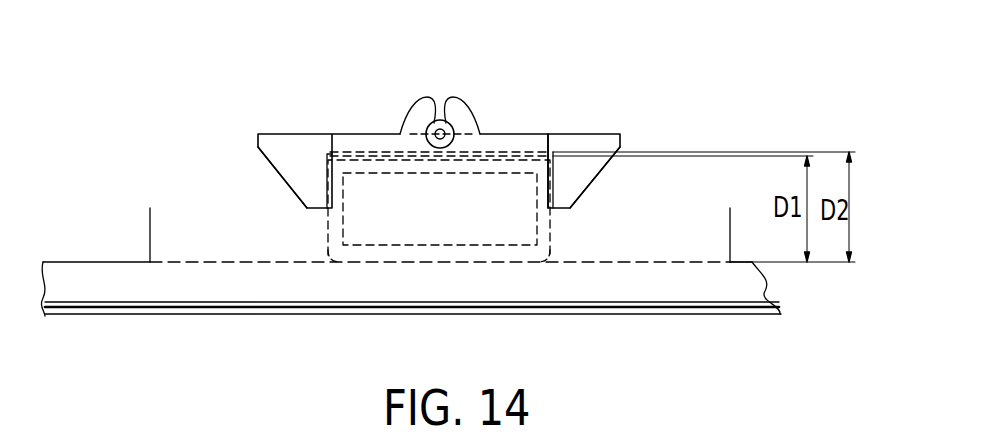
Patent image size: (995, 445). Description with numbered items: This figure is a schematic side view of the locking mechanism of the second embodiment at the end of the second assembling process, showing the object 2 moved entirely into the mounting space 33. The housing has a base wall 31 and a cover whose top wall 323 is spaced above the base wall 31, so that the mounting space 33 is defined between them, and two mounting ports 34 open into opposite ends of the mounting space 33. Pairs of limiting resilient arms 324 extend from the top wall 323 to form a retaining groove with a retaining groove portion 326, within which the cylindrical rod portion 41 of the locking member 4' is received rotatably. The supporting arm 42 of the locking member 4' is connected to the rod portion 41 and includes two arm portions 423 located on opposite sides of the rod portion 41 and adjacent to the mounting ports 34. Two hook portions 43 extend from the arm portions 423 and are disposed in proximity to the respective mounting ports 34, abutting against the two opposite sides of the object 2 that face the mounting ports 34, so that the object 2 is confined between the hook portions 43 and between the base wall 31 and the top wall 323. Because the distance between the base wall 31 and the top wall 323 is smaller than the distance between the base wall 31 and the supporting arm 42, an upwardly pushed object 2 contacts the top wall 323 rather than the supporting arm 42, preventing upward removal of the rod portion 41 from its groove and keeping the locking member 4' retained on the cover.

The object 2 is at (453, 243).
The base wall 31 is at (751, 263).
The mounting space 33 is at (538, 148).
The mounting port 34 is at (329, 193).
The rod portion 41 is at (437, 121).
The supporting arm 42 is at (327, 128).
The hook portion 43 is at (285, 162).
The top wall 323 is at (520, 153).
The limiting resilient arms 324 is at (422, 112).
The retaining groove portion 326 is at (433, 147).
The arm portions 423 is at (368, 147).
The locking member 4' is at (444, 194).